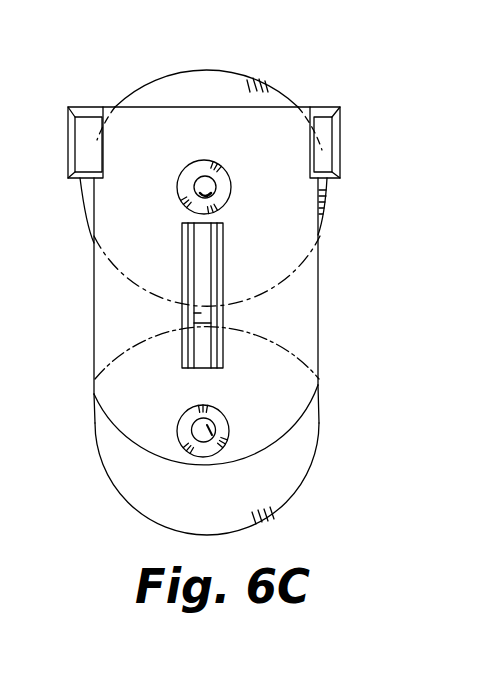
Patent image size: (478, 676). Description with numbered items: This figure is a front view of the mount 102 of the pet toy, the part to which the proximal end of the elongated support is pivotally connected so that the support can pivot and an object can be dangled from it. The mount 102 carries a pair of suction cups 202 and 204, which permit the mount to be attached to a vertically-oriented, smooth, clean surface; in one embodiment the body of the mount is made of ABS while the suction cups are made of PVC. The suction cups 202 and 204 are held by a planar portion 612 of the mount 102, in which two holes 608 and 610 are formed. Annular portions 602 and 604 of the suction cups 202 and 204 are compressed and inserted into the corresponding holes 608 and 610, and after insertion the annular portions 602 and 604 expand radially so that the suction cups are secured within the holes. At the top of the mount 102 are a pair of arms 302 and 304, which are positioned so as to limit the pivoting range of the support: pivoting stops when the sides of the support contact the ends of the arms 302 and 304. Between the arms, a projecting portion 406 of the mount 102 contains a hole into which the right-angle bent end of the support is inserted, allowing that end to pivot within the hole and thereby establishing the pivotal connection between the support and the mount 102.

The mount 102 is at (355, 65).
The suction cup 202 is at (242, 75).
The suction cup 204 is at (306, 496).
The arm 302 is at (337, 130).
The arm 304 is at (85, 135).
The projecting portion 406 is at (213, 318).
The annular portion 602 is at (185, 191).
The annular portion 604 is at (178, 432).
The hole 608 is at (229, 178).
The hole 610 is at (223, 413).
The planar portion 612 is at (305, 283).